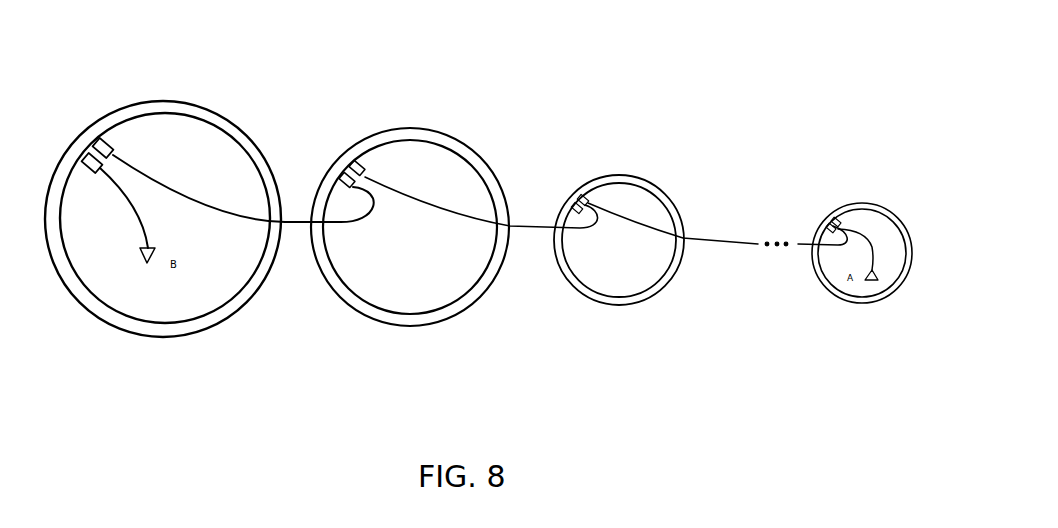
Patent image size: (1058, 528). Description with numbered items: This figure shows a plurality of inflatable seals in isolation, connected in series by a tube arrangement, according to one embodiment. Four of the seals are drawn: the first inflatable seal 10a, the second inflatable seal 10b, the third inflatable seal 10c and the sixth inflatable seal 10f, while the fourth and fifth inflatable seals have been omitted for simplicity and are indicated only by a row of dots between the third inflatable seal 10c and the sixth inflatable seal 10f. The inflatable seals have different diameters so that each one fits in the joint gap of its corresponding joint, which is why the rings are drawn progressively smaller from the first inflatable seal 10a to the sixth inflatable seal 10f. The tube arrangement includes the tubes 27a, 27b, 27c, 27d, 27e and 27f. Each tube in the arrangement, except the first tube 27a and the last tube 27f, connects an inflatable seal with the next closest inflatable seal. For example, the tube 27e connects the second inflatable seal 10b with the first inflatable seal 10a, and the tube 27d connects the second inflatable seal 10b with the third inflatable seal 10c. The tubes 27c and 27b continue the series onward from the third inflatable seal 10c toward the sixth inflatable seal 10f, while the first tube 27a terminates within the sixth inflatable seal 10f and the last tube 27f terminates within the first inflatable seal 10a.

The first inflatable seal 10a is at (247, 138).
The second inflatable seal 10b is at (473, 152).
The third inflatable seal 10c is at (642, 178).
The sixth inflatable seal 10f is at (848, 203).
The first tube 27a is at (872, 247).
The tube 27b is at (808, 242).
The tube 27c is at (728, 243).
The tube 27d is at (535, 227).
The tube 27e is at (295, 223).
The last tube 27f is at (132, 208).